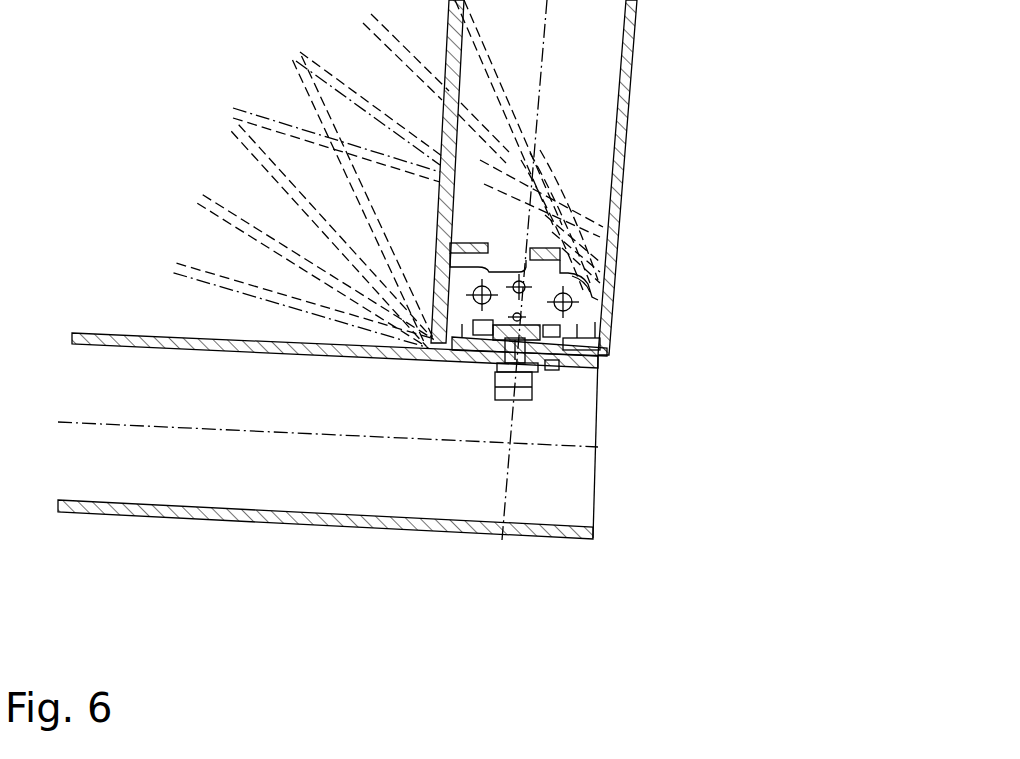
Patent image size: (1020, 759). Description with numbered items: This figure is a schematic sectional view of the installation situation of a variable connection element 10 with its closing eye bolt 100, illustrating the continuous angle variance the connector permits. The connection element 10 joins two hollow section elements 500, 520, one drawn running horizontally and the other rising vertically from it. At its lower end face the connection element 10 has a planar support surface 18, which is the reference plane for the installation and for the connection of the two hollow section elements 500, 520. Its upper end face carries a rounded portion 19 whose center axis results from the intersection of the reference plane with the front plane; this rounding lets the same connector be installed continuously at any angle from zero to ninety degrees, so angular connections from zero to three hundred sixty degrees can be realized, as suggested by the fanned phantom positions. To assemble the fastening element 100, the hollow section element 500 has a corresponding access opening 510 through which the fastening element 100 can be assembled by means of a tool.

The connection element 10 is at (582, 325).
The planar support surface 18 is at (555, 368).
The rounded portion 19 is at (587, 293).
The closing eye bolt 100 is at (482, 373).
The hollow section element 500 is at (278, 517).
The access opening 510 is at (520, 530).
The hollow section element 520 is at (620, 127).